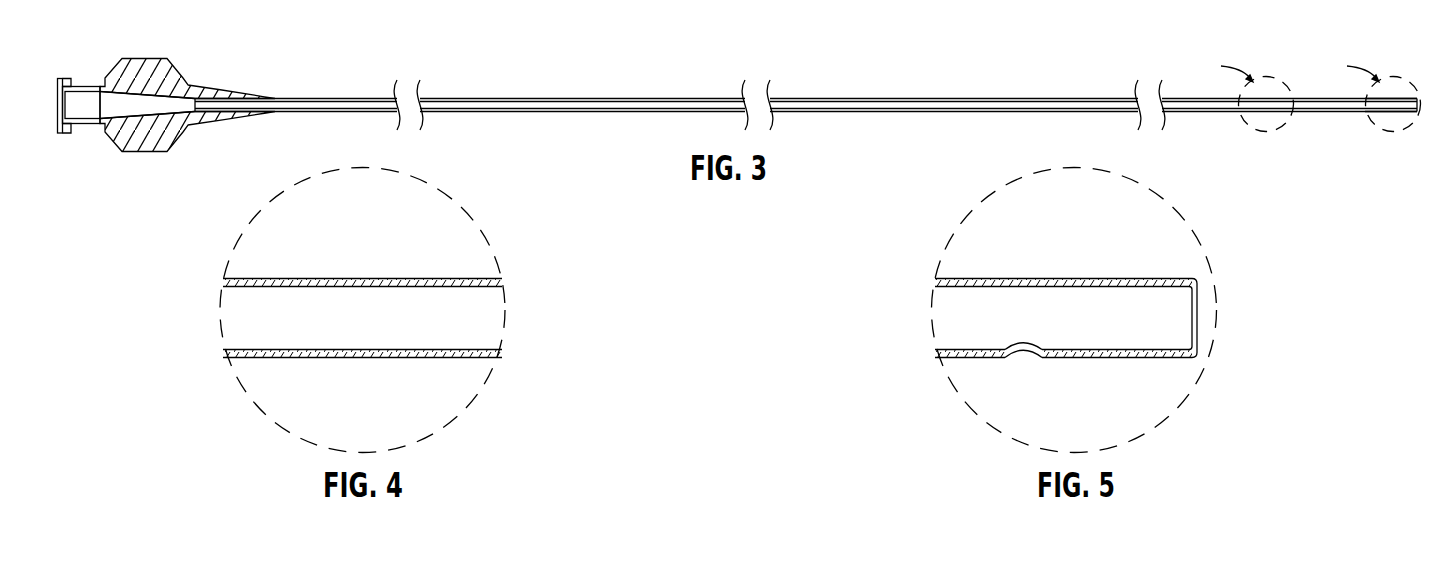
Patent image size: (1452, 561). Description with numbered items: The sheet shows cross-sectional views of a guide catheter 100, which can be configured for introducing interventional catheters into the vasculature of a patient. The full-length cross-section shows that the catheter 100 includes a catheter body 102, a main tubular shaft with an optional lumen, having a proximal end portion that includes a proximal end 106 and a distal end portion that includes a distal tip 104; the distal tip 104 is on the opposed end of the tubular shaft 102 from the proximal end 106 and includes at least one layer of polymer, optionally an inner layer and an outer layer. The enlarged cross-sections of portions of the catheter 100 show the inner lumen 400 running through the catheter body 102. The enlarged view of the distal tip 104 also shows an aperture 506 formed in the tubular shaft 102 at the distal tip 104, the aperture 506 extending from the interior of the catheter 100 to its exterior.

In FIG. 3, the guide catheter 100 is at (236, 48).
In FIG. 4, the guide catheter 100 is at (476, 414).
In FIG. 5, the guide catheter 100 is at (1186, 414).
In FIG. 3, the catheter body 102 is at (983, 98).
In FIG. 3, the distal tip 104 is at (1383, 113).
In FIG. 5, the distal tip 104 is at (1097, 280).
In FIG. 3, the proximal end 106 is at (353, 99).
In FIG. 4, the inner lumen 400 is at (257, 321).
In FIG. 5, the inner lumen 400 is at (967, 321).
In FIG. 5, the aperture 506 is at (1024, 357).